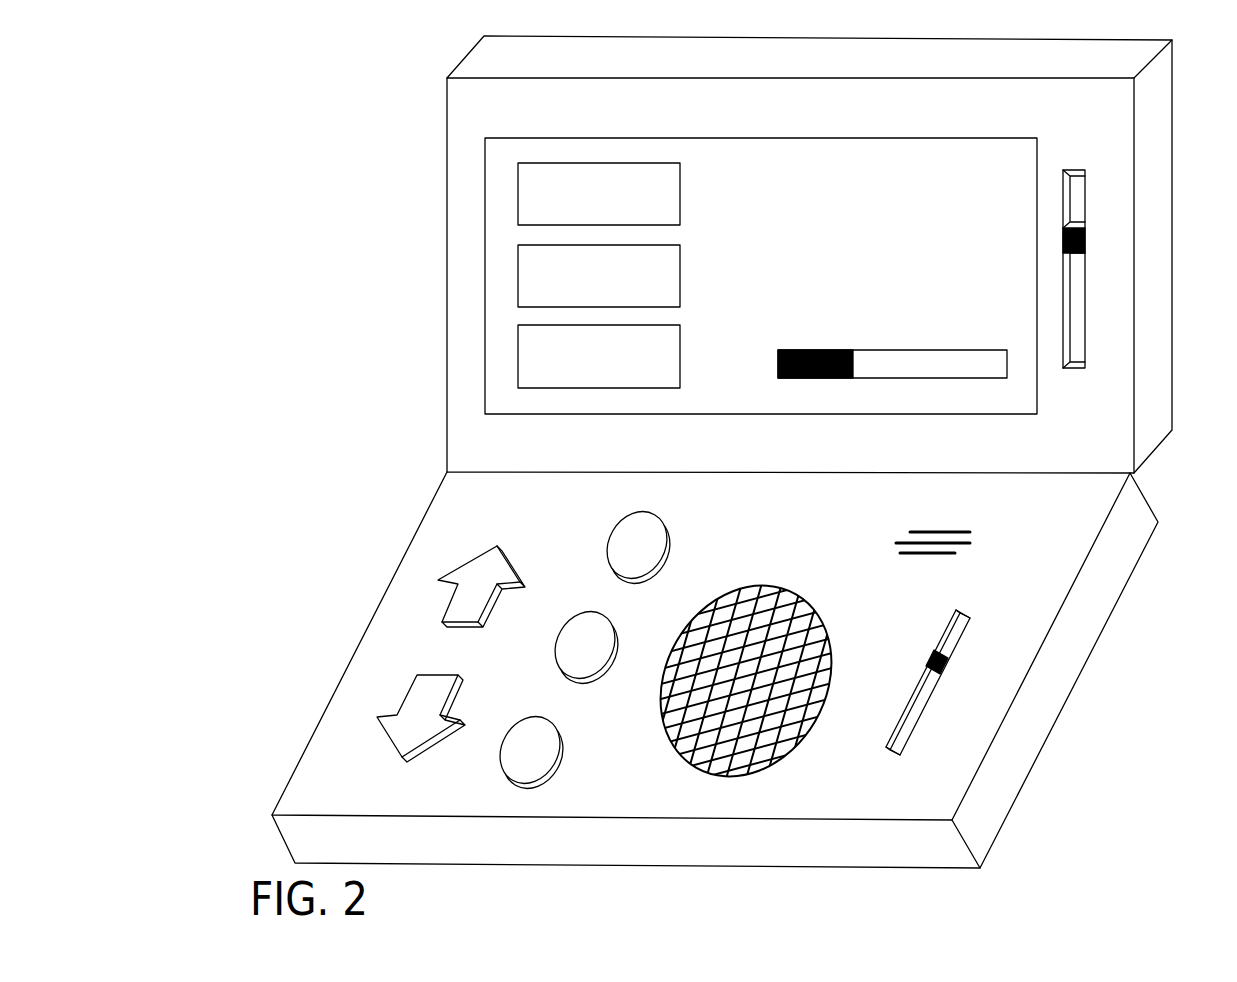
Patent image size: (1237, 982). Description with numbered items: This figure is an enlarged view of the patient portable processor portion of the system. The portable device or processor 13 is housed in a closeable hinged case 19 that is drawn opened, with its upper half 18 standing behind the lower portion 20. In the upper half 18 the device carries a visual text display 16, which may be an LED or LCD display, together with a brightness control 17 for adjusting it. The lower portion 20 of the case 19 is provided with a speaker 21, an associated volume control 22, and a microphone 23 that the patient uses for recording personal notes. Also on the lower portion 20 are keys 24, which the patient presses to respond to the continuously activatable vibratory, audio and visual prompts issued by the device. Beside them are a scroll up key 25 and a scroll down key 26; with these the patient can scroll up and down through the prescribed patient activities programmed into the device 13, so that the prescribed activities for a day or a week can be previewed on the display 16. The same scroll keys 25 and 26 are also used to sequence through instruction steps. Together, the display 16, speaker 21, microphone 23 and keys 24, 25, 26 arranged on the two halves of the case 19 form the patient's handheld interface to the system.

The portable device or processor 13 is at (708, 452).
The visual text display 16 is at (823, 223).
The brightness control 17 is at (1086, 222).
The upper half 18 is at (446, 215).
The closeable hinged case 19 is at (377, 601).
The lower portion 20 is at (331, 688).
The speaker 21 is at (702, 772).
The volume control 22 is at (948, 662).
The microphone 23 is at (958, 532).
The keys 24 is at (652, 546).
The scroll up key 25 is at (481, 594).
The scroll down key 26 is at (452, 691).